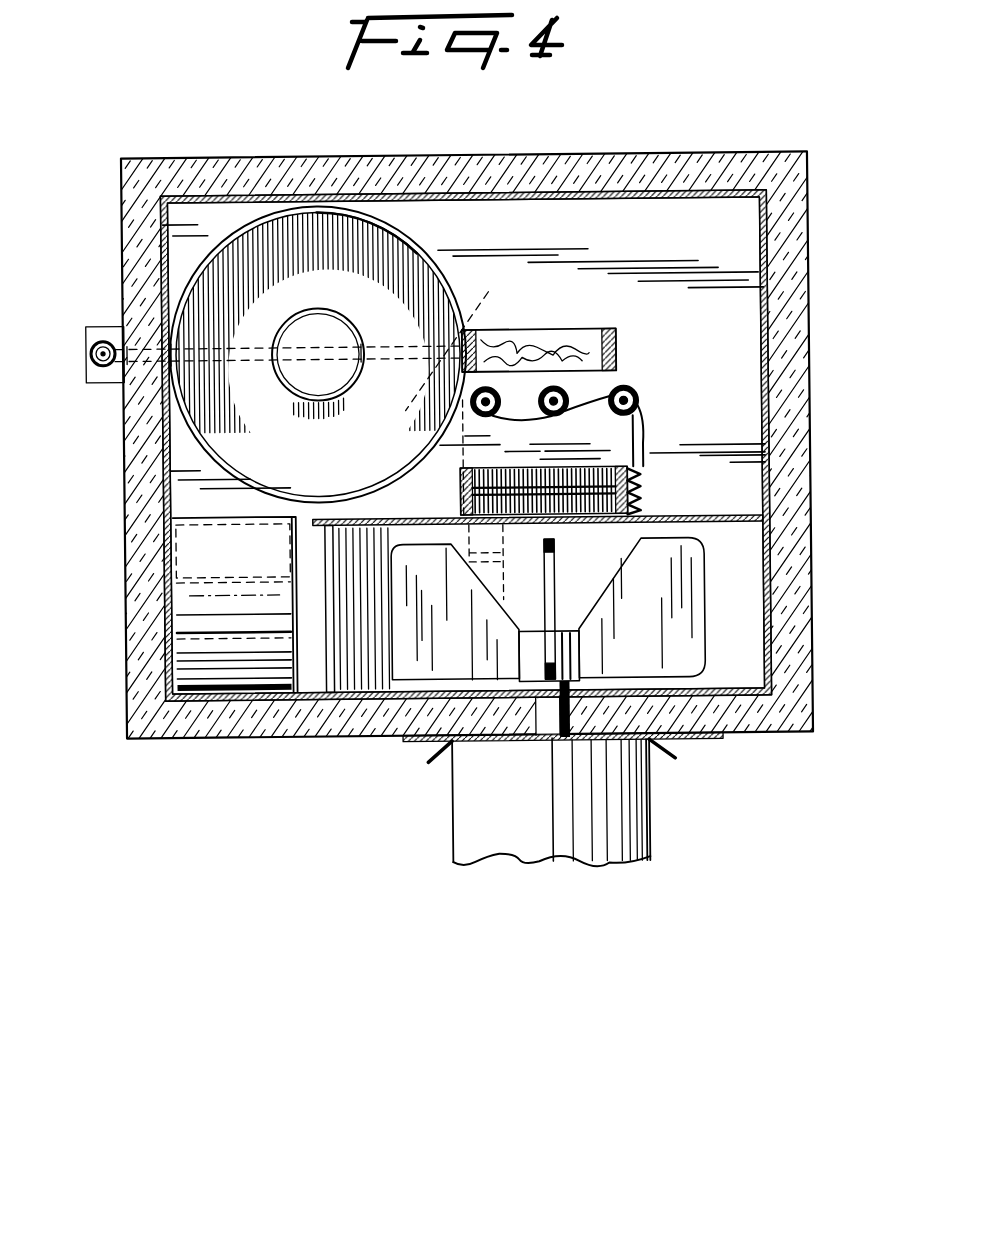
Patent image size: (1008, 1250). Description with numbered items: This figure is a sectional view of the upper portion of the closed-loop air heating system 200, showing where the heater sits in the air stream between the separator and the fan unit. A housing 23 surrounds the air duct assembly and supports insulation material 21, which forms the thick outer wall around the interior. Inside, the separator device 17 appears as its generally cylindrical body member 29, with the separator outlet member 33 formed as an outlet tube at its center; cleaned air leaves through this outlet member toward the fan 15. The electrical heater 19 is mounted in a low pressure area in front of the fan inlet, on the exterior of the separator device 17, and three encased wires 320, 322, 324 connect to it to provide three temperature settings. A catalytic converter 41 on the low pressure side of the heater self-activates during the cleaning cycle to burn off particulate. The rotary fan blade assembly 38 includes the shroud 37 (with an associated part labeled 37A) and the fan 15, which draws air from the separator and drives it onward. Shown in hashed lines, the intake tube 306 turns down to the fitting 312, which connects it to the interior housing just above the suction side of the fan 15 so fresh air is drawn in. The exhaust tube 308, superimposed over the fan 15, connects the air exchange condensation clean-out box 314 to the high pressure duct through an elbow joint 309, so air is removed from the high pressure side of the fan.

The insulation material 21 is at (720, 160).
The housing 23 is at (652, 200).
The closed-loop air heating system 200 is at (811, 273).
The separator device 17 is at (447, 273).
The cylindrical body member 29 is at (182, 276).
The separator outlet member 33 is at (321, 321).
The intake tube 306 is at (92, 348).
The exhaust tube 308 is at (88, 363).
The air exchange condensation clean-out box 314 is at (87, 383).
The fitting 312 is at (560, 336).
The catalytic converter 41 is at (616, 347).
The encased wire 320 is at (490, 390).
The encased wire 322 is at (567, 403).
The encased wire 324 is at (641, 402).
The electrical heater 19 is at (660, 469).
The shelf 37A is at (735, 519).
The shroud 37 is at (326, 632).
The rotary fan blade assembly 38 is at (555, 603).
The fan 15 is at (592, 530).
The elbow joint 309 is at (446, 512).